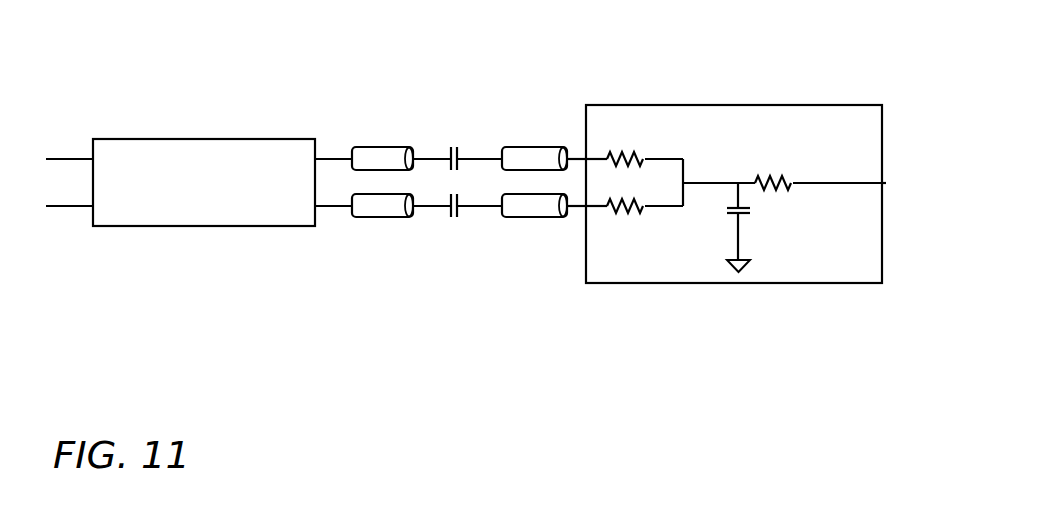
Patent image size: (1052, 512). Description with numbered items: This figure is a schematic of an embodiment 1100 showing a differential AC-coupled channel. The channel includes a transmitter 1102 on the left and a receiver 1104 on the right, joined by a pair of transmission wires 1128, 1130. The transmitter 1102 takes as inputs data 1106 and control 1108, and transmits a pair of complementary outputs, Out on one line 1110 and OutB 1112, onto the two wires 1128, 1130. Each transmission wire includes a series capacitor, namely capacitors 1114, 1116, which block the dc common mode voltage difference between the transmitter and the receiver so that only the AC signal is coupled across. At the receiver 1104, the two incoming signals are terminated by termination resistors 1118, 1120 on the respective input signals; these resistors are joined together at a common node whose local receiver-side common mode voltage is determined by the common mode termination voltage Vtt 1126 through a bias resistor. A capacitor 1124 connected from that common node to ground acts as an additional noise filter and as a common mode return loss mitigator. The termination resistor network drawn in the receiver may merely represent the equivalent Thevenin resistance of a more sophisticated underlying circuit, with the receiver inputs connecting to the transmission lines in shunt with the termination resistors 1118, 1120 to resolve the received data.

The embodiment 1100 is at (748, 308).
The transmitter 1102 is at (307, 131).
The receiver 1104 is at (810, 98).
The data 1106 is at (65, 143).
The control 1108 is at (65, 219).
The OUT output line 1110 is at (333, 157).
The OutB 1112 is at (327, 208).
The capacitor 1114 is at (455, 147).
The capacitor 1116 is at (452, 218).
The termination resistor 1118 is at (703, 145).
The termination resistor 1120 is at (703, 243).
The capacitor 1124 is at (863, 170).
The common mode termination voltage Vtt 1126 is at (938, 223).
The wire 1128 is at (403, 147).
The wire 1130 is at (400, 218).